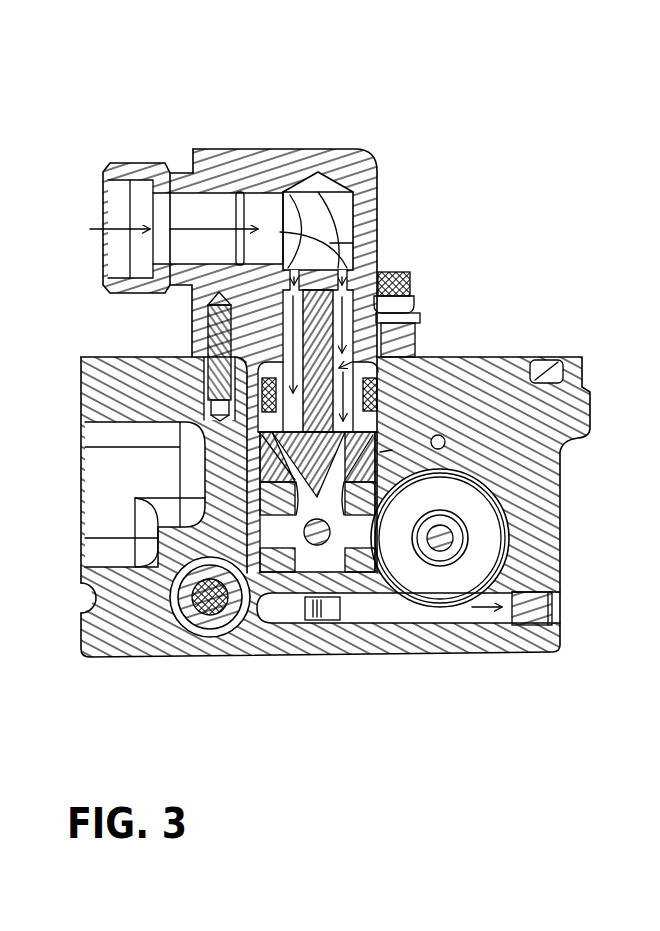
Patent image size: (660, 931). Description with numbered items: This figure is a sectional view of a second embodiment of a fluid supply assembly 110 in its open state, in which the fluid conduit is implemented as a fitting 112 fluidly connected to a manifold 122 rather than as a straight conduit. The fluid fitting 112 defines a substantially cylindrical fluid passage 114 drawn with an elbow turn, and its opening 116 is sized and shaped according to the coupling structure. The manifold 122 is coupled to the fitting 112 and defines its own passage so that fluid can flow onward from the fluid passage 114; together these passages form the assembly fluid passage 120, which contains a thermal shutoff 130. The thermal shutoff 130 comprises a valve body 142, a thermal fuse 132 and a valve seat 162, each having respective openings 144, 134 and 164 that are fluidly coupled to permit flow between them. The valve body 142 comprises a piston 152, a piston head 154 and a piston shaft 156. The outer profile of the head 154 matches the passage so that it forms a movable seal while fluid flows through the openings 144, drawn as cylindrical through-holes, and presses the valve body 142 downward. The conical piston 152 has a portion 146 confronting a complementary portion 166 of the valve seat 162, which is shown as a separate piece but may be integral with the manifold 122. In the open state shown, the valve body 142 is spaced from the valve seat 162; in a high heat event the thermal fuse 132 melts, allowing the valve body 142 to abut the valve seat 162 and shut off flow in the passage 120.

The fluid supply assembly 110 is at (380, 90).
The fluid fitting 112 is at (254, 162).
The fluid passage 114 is at (323, 204).
The opening 116 is at (102, 203).
The assembly fluid passage 120 is at (388, 450).
The manifold 122 is at (132, 624).
The thermal shutoff 130 is at (203, 450).
The thermal fuse 132 is at (444, 432).
The opening 134 is at (540, 358).
The valve body 142 is at (379, 364).
The openings 144 is at (330, 260).
The portion 146 is at (330, 540).
The piston 152 is at (262, 478).
The piston head 154 is at (330, 243).
The piston shaft 156 is at (410, 279).
The valve seat 162 is at (270, 627).
The opening 164 is at (322, 560).
The complementary portion 166 is at (283, 598).